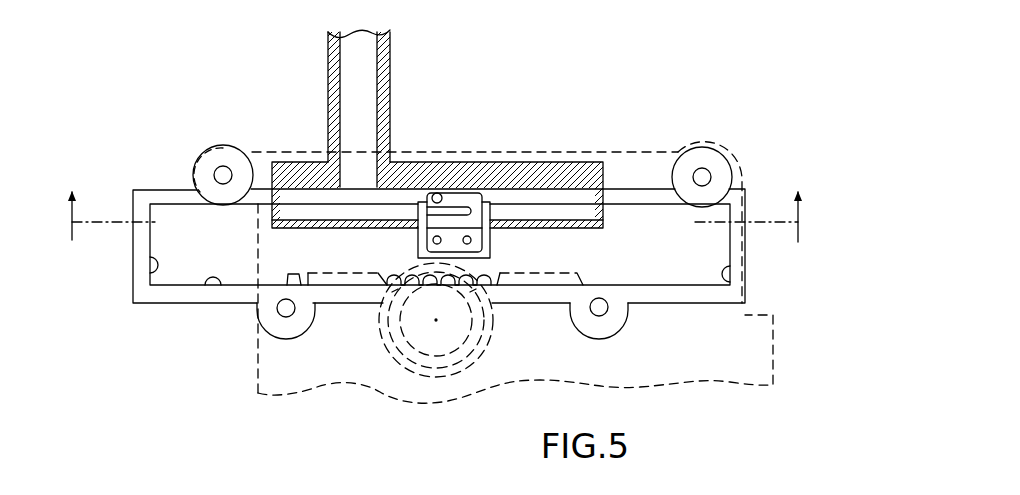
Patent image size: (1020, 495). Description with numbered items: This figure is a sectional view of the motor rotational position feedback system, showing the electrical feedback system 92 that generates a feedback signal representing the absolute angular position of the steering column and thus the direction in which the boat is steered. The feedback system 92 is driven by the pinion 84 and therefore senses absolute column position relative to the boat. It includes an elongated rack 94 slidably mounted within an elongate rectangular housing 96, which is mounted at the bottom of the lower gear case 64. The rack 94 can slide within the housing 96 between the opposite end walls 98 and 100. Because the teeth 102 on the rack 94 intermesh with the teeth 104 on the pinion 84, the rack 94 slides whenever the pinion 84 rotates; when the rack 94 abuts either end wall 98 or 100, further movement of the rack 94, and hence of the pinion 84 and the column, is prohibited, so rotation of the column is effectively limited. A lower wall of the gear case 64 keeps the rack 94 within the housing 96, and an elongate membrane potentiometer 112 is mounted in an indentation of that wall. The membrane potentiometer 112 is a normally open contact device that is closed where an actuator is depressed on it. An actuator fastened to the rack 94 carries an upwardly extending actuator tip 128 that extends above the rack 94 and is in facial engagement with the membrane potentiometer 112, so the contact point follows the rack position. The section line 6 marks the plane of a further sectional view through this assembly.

The section line 6- 6 is at (434, 229).
The lower gear case 64 is at (323, 367).
The pinion 84 is at (452, 367).
The electrical feedback system 92 is at (598, 127).
The rack 94 is at (292, 263).
The housing 96 is at (210, 277).
The end wall 98 is at (157, 265).
The end wall 100 is at (730, 285).
The rack teeth 102 is at (492, 280).
The pinion teeth 104 is at (464, 295).
The membrane potentiometer 112 is at (285, 160).
The actuator tip 128 is at (442, 198).